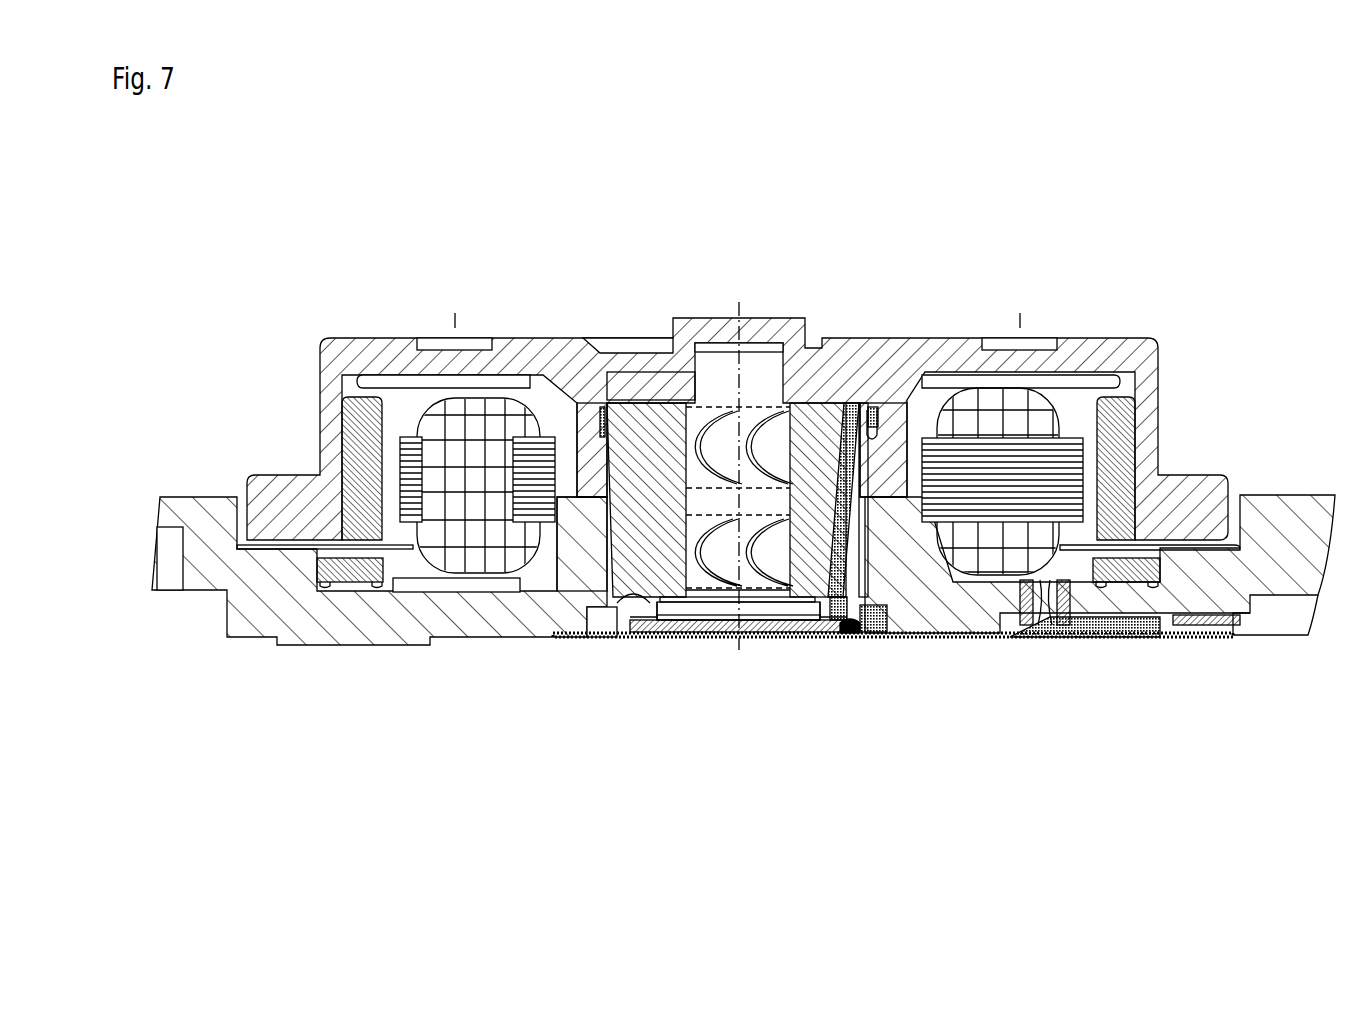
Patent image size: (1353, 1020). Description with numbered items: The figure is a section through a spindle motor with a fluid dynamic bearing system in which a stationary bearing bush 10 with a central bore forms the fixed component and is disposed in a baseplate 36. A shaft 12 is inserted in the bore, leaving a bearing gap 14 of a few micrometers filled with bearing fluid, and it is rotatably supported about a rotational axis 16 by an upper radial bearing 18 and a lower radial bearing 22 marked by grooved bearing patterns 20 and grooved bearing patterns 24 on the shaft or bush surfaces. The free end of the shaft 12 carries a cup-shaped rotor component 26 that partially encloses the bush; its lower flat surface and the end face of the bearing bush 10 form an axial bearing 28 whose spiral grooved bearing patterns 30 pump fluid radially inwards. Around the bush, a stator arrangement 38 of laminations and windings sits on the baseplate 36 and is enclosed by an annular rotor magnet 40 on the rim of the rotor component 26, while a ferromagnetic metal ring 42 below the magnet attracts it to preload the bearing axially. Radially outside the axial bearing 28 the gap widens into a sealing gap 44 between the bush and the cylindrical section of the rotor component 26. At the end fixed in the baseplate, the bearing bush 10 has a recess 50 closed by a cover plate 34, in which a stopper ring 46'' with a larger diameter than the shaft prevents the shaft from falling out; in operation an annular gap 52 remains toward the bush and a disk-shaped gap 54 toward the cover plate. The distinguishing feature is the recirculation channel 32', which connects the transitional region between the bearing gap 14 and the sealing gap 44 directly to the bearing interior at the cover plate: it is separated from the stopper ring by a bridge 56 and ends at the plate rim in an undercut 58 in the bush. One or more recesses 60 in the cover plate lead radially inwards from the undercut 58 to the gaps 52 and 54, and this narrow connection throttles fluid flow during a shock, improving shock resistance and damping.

The bearing bush 10 is at (633, 520).
The shaft 12 is at (725, 600).
The bearing gap 14 is at (807, 398).
The rotational axis 16 is at (748, 313).
The upper radial bearing 18 is at (640, 403).
The grooved bearing patterns 20 is at (725, 430).
The lower radial bearing 22 is at (760, 592).
The grooved bearing patterns 24 is at (700, 602).
The rotor component 26 is at (565, 363).
The axial bearing 28 is at (650, 408).
The grooved bearing patterns 30 is at (830, 402).
The recirculation channel 32' is at (898, 396).
The cover plate 34 is at (650, 640).
The baseplate 36 is at (300, 630).
The stator arrangement 38 is at (1008, 600).
The rotor magnet 40 is at (355, 415).
The ferromagnetic metal ring 42 is at (1160, 632).
The sealing gap 44 is at (890, 440).
The stopper ring 46'' is at (894, 690).
The recess 50 is at (650, 625).
The annular gap 52 is at (590, 555).
The disk-shaped gap 54 is at (800, 602).
The bridge 56 is at (860, 636).
The undercut 58 is at (885, 628).
The recesses 60 is at (653, 593).